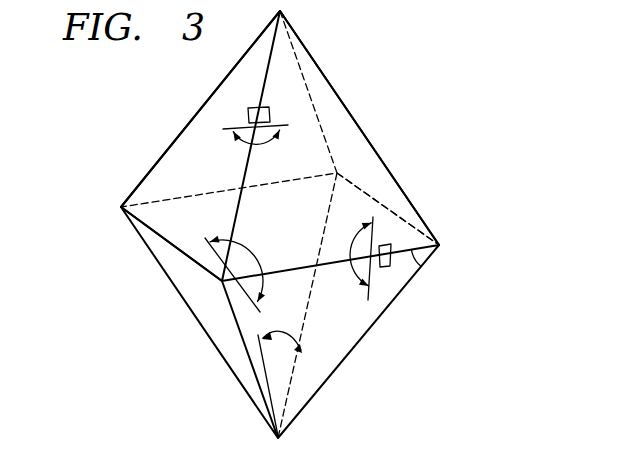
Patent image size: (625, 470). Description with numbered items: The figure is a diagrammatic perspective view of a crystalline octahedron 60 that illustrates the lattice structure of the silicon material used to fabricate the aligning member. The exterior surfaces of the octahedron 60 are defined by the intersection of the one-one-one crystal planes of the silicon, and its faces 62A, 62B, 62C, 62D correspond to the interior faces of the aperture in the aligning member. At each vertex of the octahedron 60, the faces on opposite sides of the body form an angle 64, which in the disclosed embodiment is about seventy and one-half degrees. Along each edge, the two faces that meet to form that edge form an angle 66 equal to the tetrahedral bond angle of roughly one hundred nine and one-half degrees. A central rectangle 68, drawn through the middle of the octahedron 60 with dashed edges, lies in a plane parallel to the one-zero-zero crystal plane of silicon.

The octahedron 60 is at (391, 66).
The face 62A is at (147, 239).
The face 62B is at (348, 147).
The face 62C is at (384, 193).
The face 62D is at (193, 152).
The angle 64 is at (248, 259).
The angle 66 is at (260, 142).
The central rectangle 68 is at (426, 267).